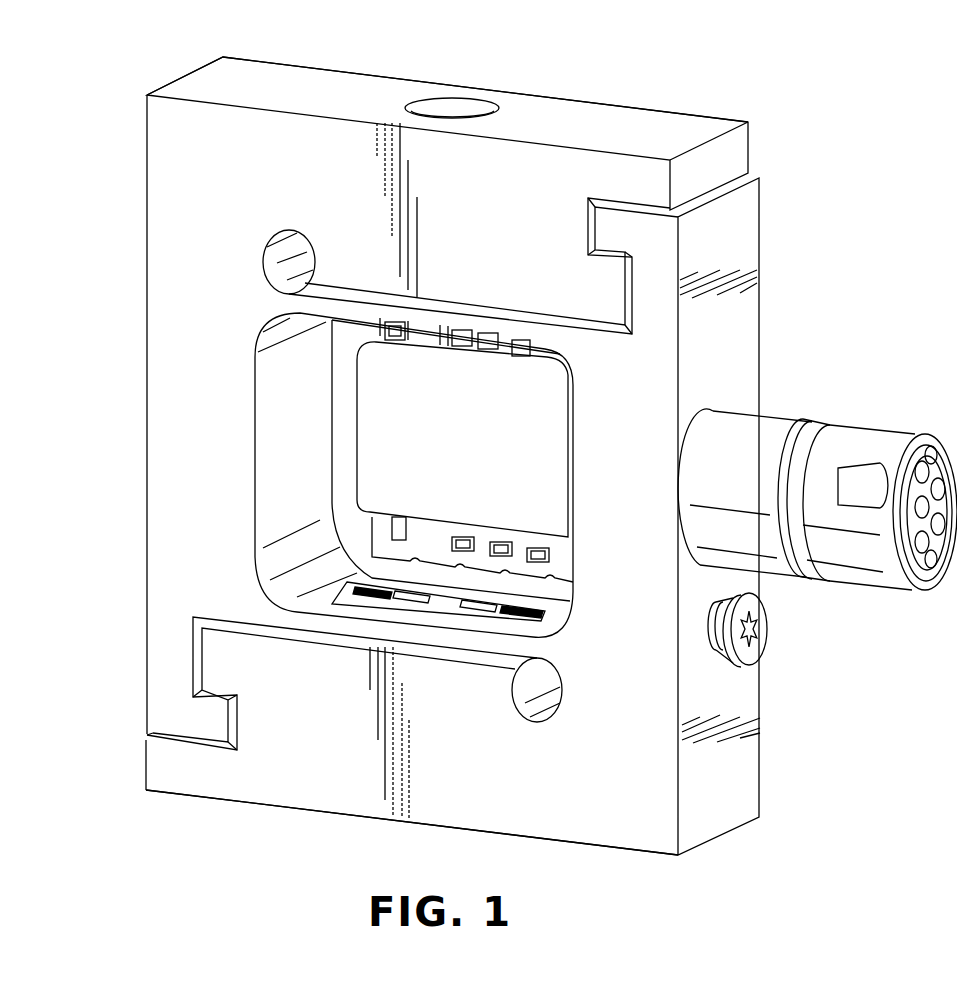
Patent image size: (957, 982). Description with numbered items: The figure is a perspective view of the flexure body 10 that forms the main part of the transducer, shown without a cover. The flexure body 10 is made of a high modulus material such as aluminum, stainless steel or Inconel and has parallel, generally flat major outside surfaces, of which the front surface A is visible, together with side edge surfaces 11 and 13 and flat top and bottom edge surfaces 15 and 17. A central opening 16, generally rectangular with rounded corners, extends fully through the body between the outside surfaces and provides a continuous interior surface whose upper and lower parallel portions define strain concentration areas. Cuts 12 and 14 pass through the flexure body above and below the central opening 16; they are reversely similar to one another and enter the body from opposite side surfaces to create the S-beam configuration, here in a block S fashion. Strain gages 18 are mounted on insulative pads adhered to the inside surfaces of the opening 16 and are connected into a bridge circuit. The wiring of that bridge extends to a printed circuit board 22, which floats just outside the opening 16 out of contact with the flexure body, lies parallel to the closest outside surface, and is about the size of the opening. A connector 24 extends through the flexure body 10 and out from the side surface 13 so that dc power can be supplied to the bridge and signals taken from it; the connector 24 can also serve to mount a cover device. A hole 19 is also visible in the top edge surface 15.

The flexure body 10 is at (540, 88).
The side edge surface 11 is at (145, 426).
The cut 12 is at (545, 313).
The side edge surface 13 is at (744, 359).
The cut 14 is at (445, 658).
The top edge surface 15 is at (310, 92).
The central opening 16 is at (273, 452).
The bottom edge surface 17 is at (602, 846).
The strain gages 18 is at (353, 590).
The mounting hole 19 is at (465, 105).
The printed circuit board 22 is at (503, 456).
The connector 24 is at (853, 588).
The major outside surface A is at (197, 163).